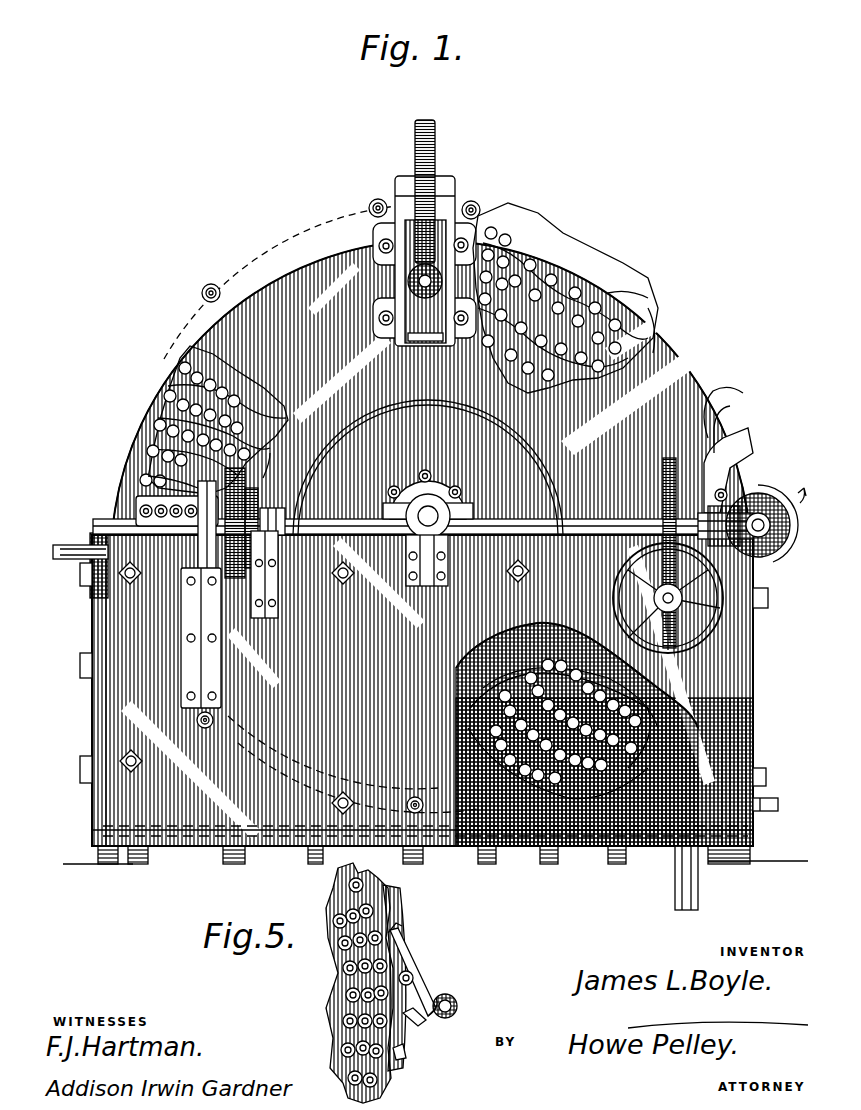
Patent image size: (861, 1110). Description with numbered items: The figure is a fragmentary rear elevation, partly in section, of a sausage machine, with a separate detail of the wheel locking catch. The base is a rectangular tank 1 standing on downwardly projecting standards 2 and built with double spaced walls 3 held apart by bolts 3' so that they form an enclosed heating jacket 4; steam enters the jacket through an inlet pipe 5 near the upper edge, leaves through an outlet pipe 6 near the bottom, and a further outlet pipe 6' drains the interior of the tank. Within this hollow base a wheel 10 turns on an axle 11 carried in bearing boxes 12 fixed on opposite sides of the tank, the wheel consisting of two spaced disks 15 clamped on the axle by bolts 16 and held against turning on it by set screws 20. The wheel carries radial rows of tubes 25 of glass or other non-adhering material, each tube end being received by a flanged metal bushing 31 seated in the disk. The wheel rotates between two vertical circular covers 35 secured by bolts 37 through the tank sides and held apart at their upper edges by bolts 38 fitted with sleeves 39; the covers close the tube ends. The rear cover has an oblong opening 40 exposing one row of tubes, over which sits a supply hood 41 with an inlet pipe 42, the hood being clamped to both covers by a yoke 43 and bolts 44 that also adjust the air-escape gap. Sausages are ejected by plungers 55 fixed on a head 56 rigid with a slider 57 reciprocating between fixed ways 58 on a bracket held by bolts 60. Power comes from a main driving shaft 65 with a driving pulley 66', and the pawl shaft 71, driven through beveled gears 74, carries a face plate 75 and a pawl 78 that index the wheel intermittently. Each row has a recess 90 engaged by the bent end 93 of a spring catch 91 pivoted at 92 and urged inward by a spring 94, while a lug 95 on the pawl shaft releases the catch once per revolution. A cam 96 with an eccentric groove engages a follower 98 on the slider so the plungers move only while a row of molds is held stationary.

In FIG. 1, the tank 1 is at (752, 628).
In FIG. 1, the standards 2 is at (90, 850).
In FIG. 1, the double spaced walls 3 is at (664, 792).
In FIG. 1, the bolts 3' is at (423, 738).
In FIG. 1, the heating jacket 4 is at (740, 725).
In FIG. 1, the inlet pipe 5 is at (58, 538).
In FIG. 1, the outlet pipe 6 is at (772, 790).
In FIG. 1, the outlet pipe 6' is at (696, 878).
In FIG. 1, the wheel 10 is at (620, 272).
In FIG. 1, the axle 11 is at (445, 480).
In FIG. 1, the bearing boxes 12 is at (410, 490).
In FIG. 1, the disks 15 is at (380, 437).
In FIG. 1, the bolts 16 is at (424, 468).
In FIG. 1, the set screws 20 is at (442, 472).
In FIG. 1, the tubes 25 is at (225, 421).
In FIG. 5, the tubes 25 is at (345, 1013).
In FIG. 1, the flanged metal bushing 31 is at (185, 346).
In FIG. 5, the flanged metal bushing 31 is at (340, 910).
In FIG. 1, the circular covers 35 is at (300, 338).
In FIG. 5, the circular covers 35 is at (392, 1054).
In FIG. 1, the bolts 37 is at (195, 720).
In FIG. 1, the bolts 38 is at (362, 194).
In FIG. 1, the sleeves 39 is at (600, 286).
In FIG. 1, the oblong opening 40 is at (446, 195).
In FIG. 1, the supply hood 41 is at (392, 180).
In FIG. 1, the inlet pipe 42 is at (448, 186).
In FIG. 1, the yoke 43 is at (425, 132).
In FIG. 1, the bolts 44 is at (460, 232).
In FIG. 1, the plungers 55 is at (128, 497).
In FIG. 1, the head 56 is at (226, 500).
In FIG. 1, the slider 57 is at (198, 522).
In FIG. 1, the fixed ways 58 is at (212, 596).
In FIG. 1, the bolts 60 is at (204, 578).
In FIG. 1, the main driving shaft 65 is at (648, 588).
In FIG. 1, the driving pulley 66' is at (724, 627).
In FIG. 1, the pawl shaft 71 is at (768, 536).
In FIG. 5, the pawl shaft 71 is at (450, 998).
In FIG. 1, the beveled gears 74 is at (770, 520).
In FIG. 1, the face plate 75 is at (752, 496).
In FIG. 1, the pawl 78 is at (718, 487).
In FIG. 1, the recess 90 is at (175, 434).
In FIG. 5, the recess 90 is at (390, 1045).
In FIG. 1, the spring catch 91 is at (712, 448).
In FIG. 5, the spring catch 91 is at (416, 950).
In FIG. 5, the pivot 92 is at (406, 968).
In FIG. 5, the bent end 93 is at (386, 924).
In FIG. 5, the spring 94 is at (409, 1012).
In FIG. 5, the lug 95 is at (440, 988).
In FIG. 1, the cam 96 is at (255, 470).
In FIG. 1, the follower 98 is at (262, 604).